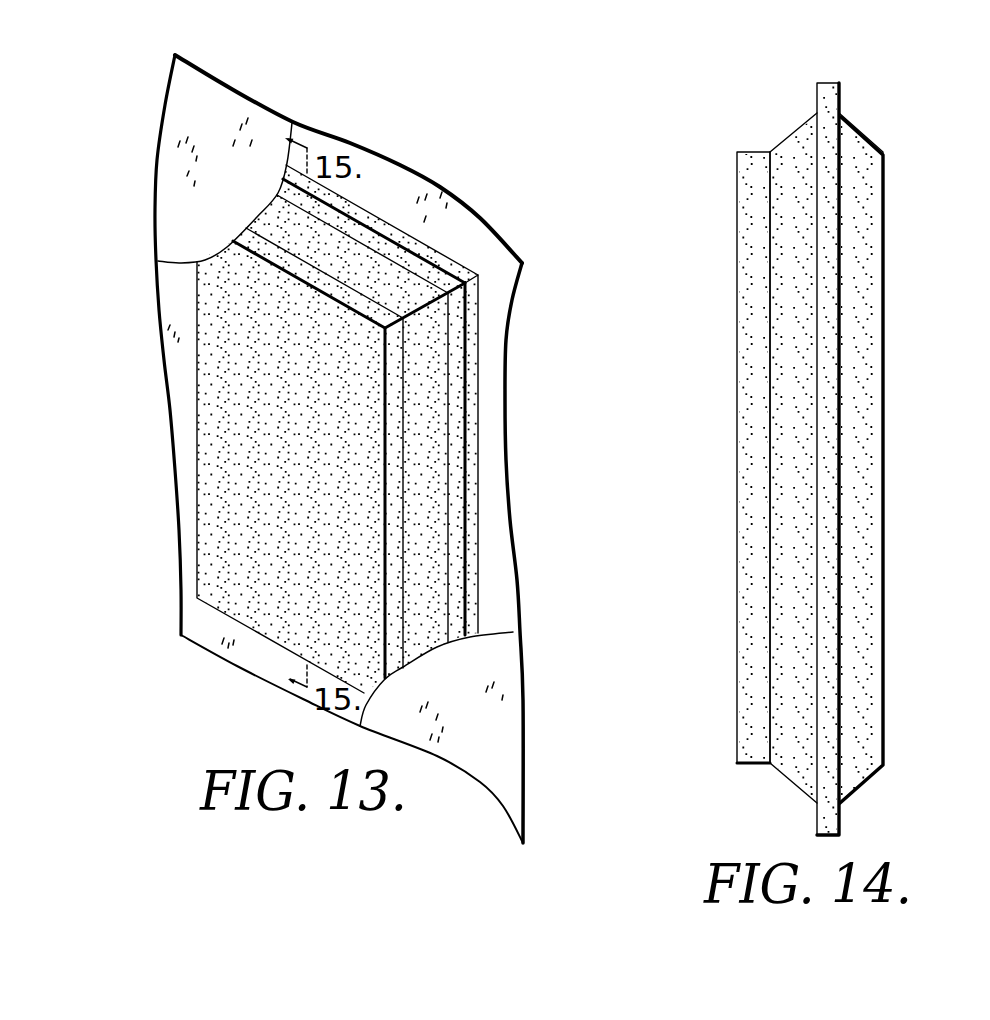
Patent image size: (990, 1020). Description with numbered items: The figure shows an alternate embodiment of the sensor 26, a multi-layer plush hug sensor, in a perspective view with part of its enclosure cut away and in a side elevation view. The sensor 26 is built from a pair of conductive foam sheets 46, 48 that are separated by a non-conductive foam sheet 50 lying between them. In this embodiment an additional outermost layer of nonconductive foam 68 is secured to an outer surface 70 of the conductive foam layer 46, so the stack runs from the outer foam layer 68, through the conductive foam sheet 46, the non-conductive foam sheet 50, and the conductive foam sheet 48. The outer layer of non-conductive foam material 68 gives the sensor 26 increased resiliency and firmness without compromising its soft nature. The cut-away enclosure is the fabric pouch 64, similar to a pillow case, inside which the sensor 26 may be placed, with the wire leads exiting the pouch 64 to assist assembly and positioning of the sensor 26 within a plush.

In FIG. 13, the sensor 26 is at (450, 283).
In FIG. 14, the sensor 26 is at (866, 128).
In FIG. 14, the conductive foam sheet 46 is at (785, 252).
In FIG. 14, the conductive foam sheet 48 is at (868, 467).
In FIG. 14, the non-conductive foam sheet 50 is at (828, 348).
In FIG. 13, the fabric pouch 64 is at (508, 735).
In FIG. 13, the outermost layer of nonconductive foam 68 is at (262, 617).
In FIG. 14, the outermost layer of nonconductive foam 68 is at (752, 745).
In FIG. 14, the outer surface 70 is at (770, 393).